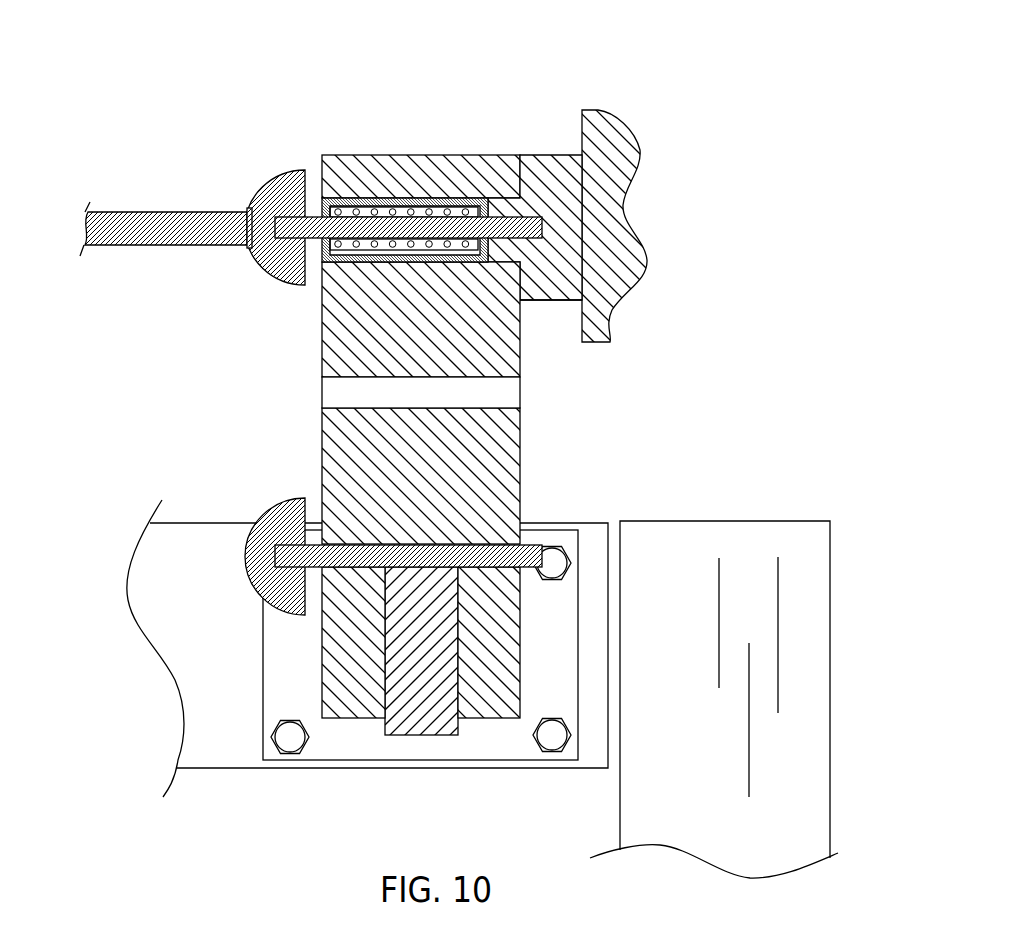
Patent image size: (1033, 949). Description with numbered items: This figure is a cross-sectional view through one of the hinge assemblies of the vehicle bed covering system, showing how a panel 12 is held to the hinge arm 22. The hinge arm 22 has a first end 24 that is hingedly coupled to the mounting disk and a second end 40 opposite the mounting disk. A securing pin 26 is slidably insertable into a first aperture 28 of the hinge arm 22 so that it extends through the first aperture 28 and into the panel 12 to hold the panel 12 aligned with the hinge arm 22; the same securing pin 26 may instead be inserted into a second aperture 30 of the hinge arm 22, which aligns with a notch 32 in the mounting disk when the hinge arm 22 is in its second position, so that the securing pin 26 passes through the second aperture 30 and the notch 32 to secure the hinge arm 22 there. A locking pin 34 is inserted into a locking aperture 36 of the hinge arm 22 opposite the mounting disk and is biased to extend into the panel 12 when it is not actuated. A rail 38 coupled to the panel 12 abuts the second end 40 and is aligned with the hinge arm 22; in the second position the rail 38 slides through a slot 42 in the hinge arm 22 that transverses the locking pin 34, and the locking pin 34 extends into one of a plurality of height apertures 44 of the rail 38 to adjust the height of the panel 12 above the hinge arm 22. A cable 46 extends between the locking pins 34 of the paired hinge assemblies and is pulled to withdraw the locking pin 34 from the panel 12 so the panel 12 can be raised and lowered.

The panel 12 is at (618, 118).
The hinge arm 22 is at (520, 436).
The first end 24 is at (352, 720).
The securing pin 26 is at (258, 515).
The first aperture 28 is at (330, 392).
The second aperture 30 is at (483, 543).
The notch 32 is at (432, 570).
The locking pin 34 is at (276, 170).
The locking aperture 36 is at (345, 262).
The rail 38 is at (545, 155).
The second end 40 is at (418, 155).
The slot 42 is at (520, 308).
The height aperture 44 is at (543, 230).
The cable 46 is at (123, 212).